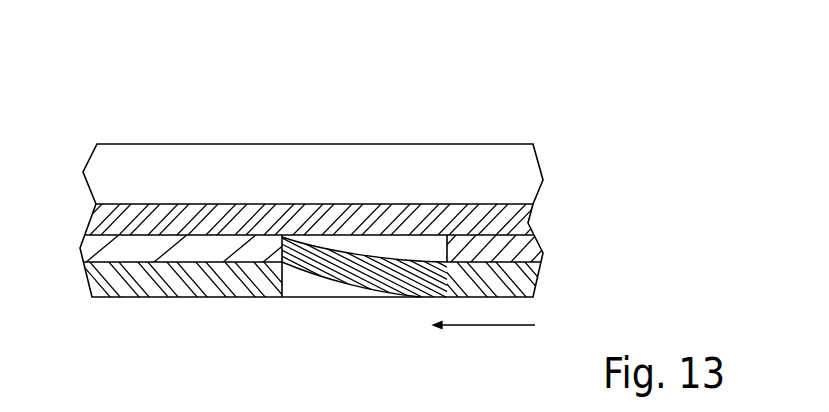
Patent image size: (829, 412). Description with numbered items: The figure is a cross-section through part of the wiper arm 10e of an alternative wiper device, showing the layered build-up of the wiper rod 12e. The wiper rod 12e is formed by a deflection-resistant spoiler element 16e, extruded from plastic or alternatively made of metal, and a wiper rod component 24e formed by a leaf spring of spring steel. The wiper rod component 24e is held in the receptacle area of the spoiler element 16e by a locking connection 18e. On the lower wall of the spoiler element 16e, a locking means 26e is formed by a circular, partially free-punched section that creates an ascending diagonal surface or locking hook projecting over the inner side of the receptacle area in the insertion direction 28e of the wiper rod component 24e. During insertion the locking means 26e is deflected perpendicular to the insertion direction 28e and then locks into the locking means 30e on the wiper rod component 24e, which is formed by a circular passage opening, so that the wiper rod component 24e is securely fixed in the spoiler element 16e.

The wiper arm 10e is at (165, 141).
The wiper rod 12e is at (545, 225).
The spoiler element 16e is at (405, 175).
The locking connection 18e is at (316, 300).
The wiper rod component 24e is at (545, 257).
The locking means 26e is at (365, 272).
The insertion direction 28e is at (485, 325).
The locking means 30e is at (407, 247).